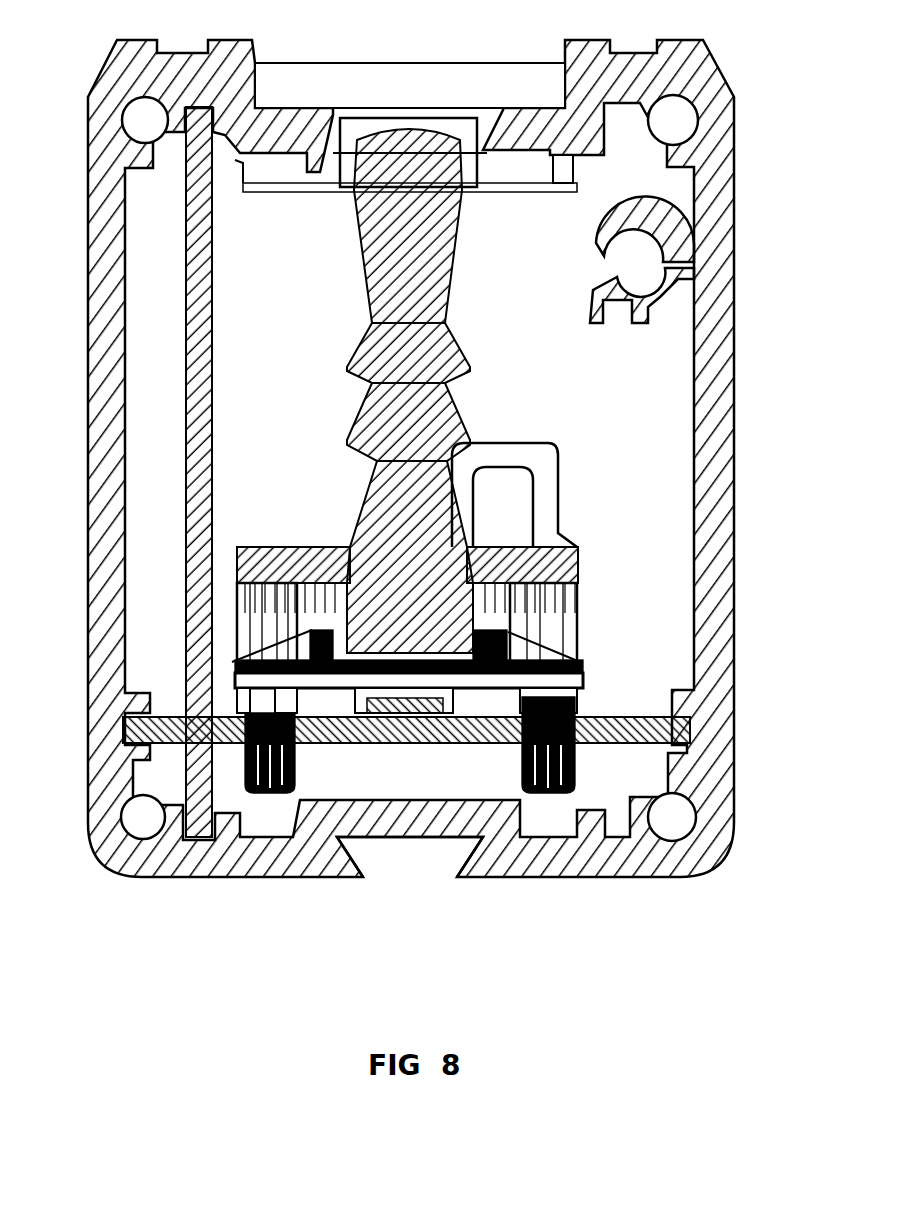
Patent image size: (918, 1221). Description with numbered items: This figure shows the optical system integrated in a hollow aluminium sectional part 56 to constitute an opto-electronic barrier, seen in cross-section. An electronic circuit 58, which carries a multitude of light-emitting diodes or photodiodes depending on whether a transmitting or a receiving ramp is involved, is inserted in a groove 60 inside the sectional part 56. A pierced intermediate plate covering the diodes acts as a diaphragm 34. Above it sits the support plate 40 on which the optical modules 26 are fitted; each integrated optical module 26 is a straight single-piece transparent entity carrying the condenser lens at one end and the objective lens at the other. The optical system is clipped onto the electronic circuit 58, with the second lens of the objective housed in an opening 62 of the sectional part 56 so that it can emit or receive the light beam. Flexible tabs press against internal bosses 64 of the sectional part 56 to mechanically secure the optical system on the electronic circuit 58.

The integrated optical module 26 is at (414, 175).
The diaphragm 34 is at (267, 660).
The support plate 40 is at (557, 558).
The hollow aluminium sectional part 56 is at (323, 862).
The electronic circuit 58 is at (621, 728).
The groove 60 is at (684, 703).
The opening 62 is at (342, 175).
The internal bosses 64 is at (240, 173).